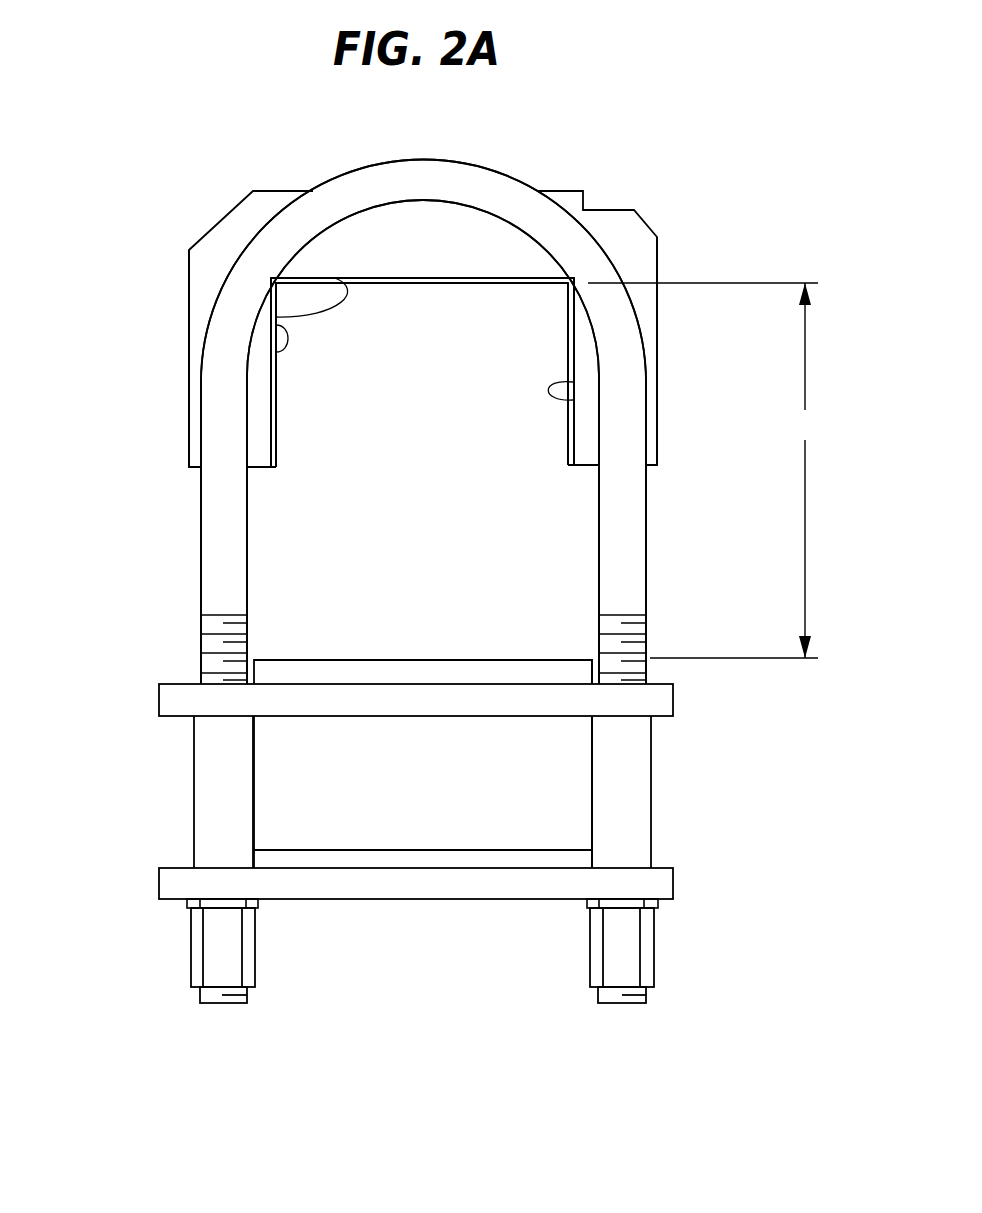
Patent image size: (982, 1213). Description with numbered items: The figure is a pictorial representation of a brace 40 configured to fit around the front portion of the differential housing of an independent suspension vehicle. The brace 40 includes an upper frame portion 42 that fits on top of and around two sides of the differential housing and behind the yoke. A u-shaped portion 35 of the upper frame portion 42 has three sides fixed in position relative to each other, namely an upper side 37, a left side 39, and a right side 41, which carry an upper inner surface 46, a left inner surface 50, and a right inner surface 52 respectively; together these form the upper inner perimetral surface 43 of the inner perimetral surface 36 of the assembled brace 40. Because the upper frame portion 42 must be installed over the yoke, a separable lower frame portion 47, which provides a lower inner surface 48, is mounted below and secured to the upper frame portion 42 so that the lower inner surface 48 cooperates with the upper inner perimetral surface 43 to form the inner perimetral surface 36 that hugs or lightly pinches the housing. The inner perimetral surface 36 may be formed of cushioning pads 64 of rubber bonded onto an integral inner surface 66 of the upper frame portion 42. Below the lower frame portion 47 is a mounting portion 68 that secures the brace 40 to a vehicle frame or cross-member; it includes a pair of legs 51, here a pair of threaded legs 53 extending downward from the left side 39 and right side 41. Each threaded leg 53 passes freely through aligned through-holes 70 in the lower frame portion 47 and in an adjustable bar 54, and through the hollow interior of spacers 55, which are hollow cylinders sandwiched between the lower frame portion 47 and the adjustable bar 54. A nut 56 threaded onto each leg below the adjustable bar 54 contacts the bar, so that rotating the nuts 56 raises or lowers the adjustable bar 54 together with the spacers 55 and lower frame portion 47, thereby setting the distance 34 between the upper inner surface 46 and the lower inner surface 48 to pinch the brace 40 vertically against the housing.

The distance 34 is at (703, 470).
The portion of the upper frame portion 35 is at (569, 165).
The inner perimetral surface 36 is at (277, 372).
The upper side 37 is at (313, 191).
The left side 39 is at (189, 347).
The brace 40 is at (606, 157).
The right side 41 is at (657, 255).
The upper frame portion 42 is at (170, 503).
The upper inner perimetral surface 43 is at (271, 313).
The upper inner surface 46 is at (427, 278).
The lower frame portion 47 is at (690, 697).
The lower inner surface 48 is at (575, 658).
The left inner surface 50 is at (273, 397).
The legs 51 is at (207, 1003).
The right inner surface 52 is at (572, 418).
The threaded legs 53 is at (213, 537).
The adjustable bar 54 is at (312, 922).
The spacers 55 is at (193, 793).
The nut 56 is at (190, 958).
The cushioning pads 64 is at (573, 368).
The integral inner surface 66 is at (335, 278).
The mounting portion 68 is at (724, 859).
The through-holes 70 is at (657, 684).